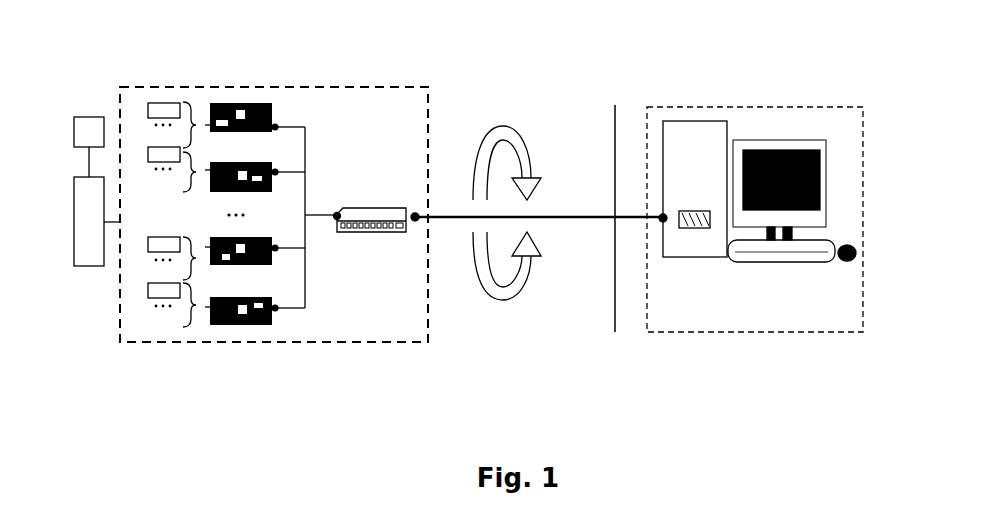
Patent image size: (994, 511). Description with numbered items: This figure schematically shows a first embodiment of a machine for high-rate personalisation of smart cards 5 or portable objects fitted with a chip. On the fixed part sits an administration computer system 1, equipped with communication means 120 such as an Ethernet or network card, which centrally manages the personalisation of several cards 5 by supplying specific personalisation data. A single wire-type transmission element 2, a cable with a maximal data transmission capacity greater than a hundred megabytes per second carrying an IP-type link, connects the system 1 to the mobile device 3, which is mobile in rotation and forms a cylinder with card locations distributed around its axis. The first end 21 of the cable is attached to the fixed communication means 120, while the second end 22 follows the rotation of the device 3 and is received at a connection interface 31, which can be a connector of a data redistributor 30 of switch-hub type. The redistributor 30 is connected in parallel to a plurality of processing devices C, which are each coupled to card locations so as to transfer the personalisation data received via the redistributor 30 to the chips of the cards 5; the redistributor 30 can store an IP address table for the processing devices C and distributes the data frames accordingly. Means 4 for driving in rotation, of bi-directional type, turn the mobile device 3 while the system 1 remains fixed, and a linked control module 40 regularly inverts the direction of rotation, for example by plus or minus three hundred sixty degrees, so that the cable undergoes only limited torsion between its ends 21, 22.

The administration computer system 1 is at (755, 317).
The transmission element 2 is at (552, 225).
The mobile device 3 is at (277, 348).
The means for driving in rotation 4 is at (88, 262).
The smart cards 5 is at (148, 236).
The processing devices C is at (240, 168).
The first end 21 is at (658, 214).
The second end 22 is at (422, 208).
The data redistributor 30 is at (358, 204).
The connection interface 31 is at (410, 224).
The control module 40 is at (97, 122).
The communication means 120 is at (695, 230).